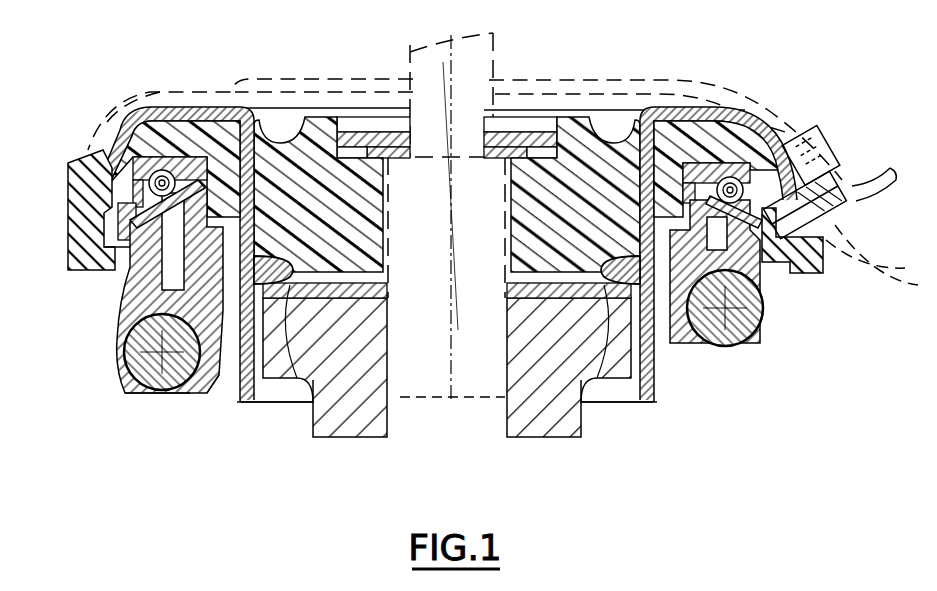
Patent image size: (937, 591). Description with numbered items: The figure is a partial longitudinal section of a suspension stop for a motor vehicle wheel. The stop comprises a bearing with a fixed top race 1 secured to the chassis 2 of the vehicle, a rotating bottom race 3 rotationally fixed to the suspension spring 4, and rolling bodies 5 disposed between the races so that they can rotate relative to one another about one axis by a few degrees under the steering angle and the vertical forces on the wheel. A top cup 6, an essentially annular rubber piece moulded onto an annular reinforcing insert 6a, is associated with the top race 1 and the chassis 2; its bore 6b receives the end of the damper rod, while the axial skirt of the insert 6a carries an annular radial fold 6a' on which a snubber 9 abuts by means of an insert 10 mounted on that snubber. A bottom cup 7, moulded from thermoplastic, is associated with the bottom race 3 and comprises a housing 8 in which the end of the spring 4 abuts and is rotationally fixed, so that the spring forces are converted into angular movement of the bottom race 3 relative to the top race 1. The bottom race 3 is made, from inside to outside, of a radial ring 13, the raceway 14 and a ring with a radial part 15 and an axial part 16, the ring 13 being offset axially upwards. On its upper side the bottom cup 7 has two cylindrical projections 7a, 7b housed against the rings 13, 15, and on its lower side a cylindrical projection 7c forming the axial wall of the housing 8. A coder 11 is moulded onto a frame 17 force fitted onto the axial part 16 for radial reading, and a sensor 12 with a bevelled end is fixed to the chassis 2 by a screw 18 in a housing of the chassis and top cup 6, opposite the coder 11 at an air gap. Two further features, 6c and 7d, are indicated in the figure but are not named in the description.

The top race 1 is at (173, 167).
The chassis 2 is at (600, 90).
The bottom race 3 is at (150, 292).
The suspension spring 4 is at (147, 387).
The rolling bodies 5 is at (110, 133).
The top cup 6 is at (140, 147).
The annular reinforcing insert 6a is at (175, 127).
The annular radial fold 6a' is at (447, 426).
The bore 6b is at (413, 377).
The cover lip 6c is at (775, 265).
The bottom cup 7 is at (120, 333).
The cylindrical projection 7a is at (473, 288).
The cylindrical projection 7b is at (178, 388).
The cylindrical projection 7c is at (212, 395).
The second seal ring 7d is at (767, 293).
The housing 8 is at (140, 370).
The snubber 9 is at (555, 400).
The insert 10 is at (507, 410).
The coder 11 is at (138, 220).
The sensor 12 is at (842, 205).
The radial ring 13 is at (707, 177).
The raceway 14 is at (745, 185).
The radial part 15 is at (773, 167).
The axial part 16 is at (757, 340).
The frame 17 is at (150, 240).
The screw 18 is at (847, 140).